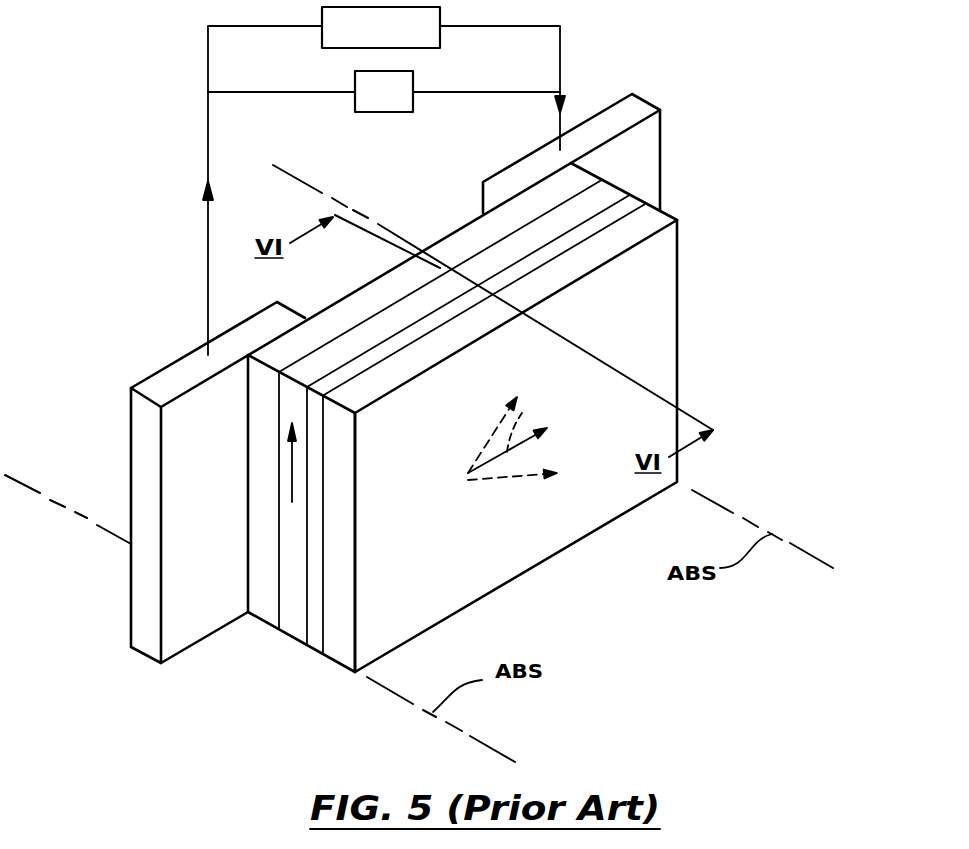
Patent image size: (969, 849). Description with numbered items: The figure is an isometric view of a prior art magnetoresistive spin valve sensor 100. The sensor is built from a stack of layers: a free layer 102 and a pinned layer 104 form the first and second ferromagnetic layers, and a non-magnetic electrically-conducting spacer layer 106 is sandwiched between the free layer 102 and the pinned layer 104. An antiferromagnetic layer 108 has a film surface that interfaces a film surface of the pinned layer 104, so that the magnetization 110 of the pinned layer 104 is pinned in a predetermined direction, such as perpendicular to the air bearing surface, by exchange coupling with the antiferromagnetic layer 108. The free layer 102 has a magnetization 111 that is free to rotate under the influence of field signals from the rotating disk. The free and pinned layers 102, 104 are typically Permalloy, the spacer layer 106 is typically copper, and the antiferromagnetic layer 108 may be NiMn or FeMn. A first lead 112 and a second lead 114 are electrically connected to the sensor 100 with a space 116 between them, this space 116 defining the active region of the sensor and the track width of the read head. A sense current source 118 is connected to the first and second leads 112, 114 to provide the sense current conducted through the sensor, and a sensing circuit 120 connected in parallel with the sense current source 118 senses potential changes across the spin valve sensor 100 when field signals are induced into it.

The spin valve sensor 100 is at (719, 182).
The free layer 102 is at (340, 648).
The pinned layer 104 is at (296, 628).
The spacer layer 106 is at (317, 647).
The antiferromagnetic layer 108 is at (262, 604).
The magnetization of the pinned layer 110 is at (293, 472).
The magnetization of the free layer 111 is at (523, 412).
The first lead 112 is at (195, 605).
The second lead 114 is at (651, 134).
The space 116 is at (398, 212).
The sense current source 118 is at (384, 112).
The sensing circuit 120 is at (441, 14).